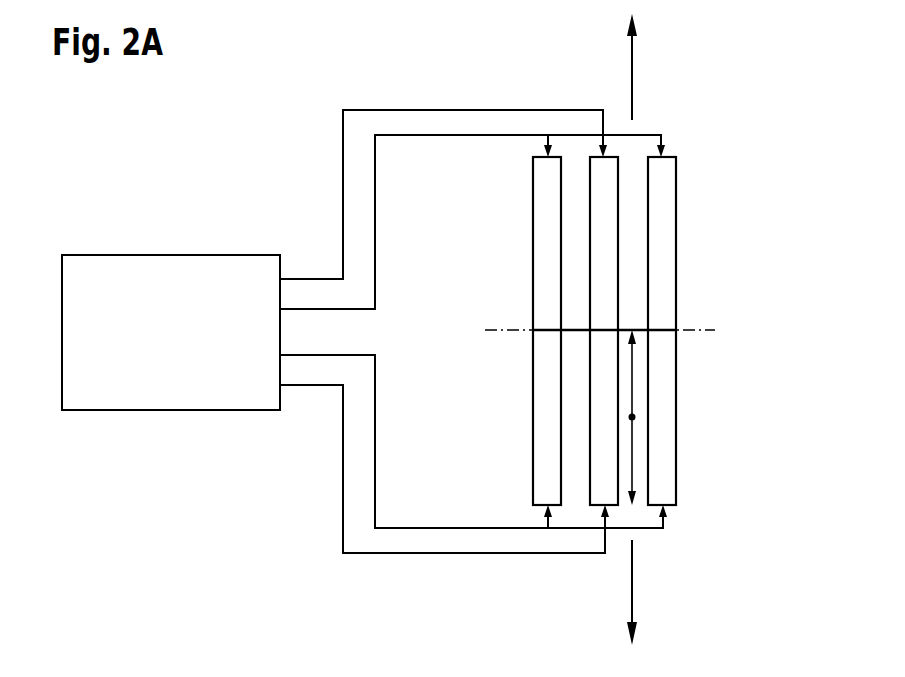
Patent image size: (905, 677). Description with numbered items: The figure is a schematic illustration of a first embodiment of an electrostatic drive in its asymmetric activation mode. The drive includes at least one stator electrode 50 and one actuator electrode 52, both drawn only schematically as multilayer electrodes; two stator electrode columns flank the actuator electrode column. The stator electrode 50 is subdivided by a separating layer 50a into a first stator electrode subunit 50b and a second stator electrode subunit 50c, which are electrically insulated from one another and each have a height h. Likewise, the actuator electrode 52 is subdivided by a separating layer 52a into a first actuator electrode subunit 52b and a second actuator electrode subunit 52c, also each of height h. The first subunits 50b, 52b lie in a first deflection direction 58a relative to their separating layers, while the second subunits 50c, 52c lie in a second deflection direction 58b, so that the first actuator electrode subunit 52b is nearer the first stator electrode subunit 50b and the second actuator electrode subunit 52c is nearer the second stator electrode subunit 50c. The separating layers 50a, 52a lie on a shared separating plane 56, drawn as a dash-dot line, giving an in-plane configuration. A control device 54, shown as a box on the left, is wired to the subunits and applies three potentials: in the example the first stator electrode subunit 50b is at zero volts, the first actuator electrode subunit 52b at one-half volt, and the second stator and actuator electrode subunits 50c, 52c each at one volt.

The stator electrode 50 is at (534, 146).
The separating layer 50a is at (543, 331).
The first stator electrode subunit 50b is at (548, 448).
The second stator electrode subunit 50c is at (548, 280).
The actuator electrode 52 is at (616, 146).
The separating layer 52a is at (613, 323).
The first actuator electrode subunit 52b is at (608, 473).
The second actuator electrode subunit 52c is at (607, 213).
The control device 54 is at (189, 380).
The separating plane 56 is at (500, 330).
The first deflection direction 58a is at (633, 585).
The second deflection direction 58b is at (633, 52).
The height h is at (632, 417).